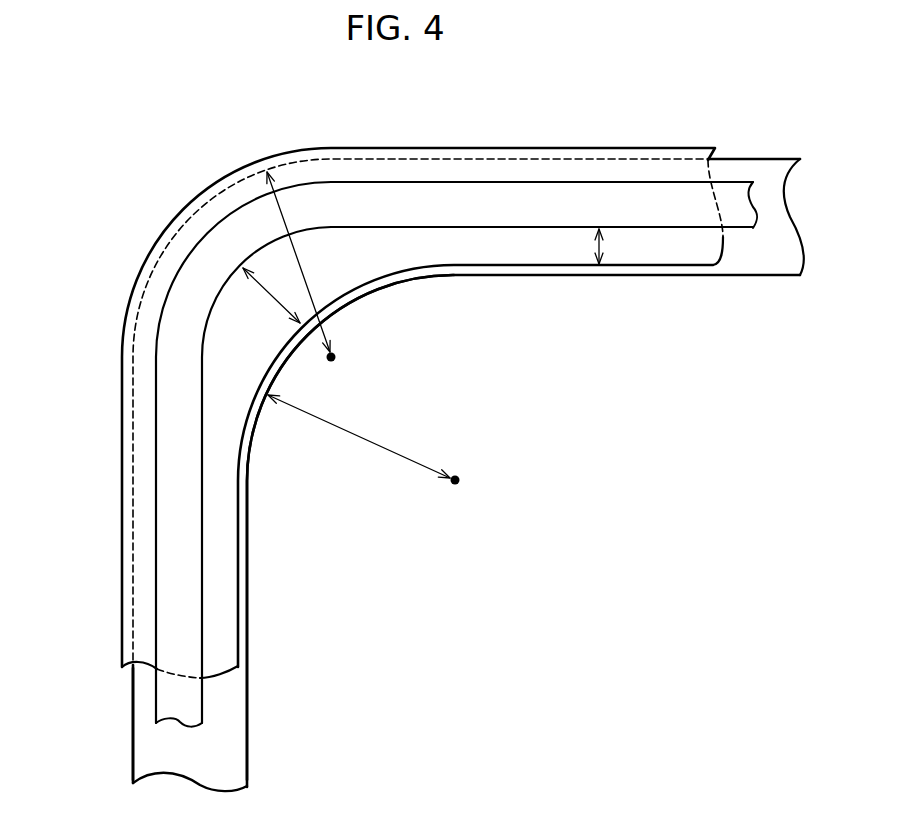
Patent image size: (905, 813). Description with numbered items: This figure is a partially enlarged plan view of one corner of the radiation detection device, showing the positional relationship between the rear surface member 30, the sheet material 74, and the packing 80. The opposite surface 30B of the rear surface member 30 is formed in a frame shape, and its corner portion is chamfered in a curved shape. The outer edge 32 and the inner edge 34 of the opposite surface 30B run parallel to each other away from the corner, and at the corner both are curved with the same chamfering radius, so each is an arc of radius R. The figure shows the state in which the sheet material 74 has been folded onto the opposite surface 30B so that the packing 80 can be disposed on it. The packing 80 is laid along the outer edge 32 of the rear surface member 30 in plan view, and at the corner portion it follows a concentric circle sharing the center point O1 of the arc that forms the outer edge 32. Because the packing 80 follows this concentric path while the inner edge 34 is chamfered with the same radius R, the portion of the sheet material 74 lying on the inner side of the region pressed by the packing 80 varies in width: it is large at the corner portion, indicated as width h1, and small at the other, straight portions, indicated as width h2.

The rear surface member 30 is at (768, 278).
The opposite surface 30B is at (772, 175).
The outer edge 32 is at (132, 722).
The inner edge 34 is at (250, 747).
The sheet material 74 is at (430, 148).
The packing 80 is at (532, 182).
The center point O1 is at (338, 355).
The radius R is at (287, 207).
The width at corner portion h1 is at (273, 297).
The width at other portions h2 is at (603, 245).